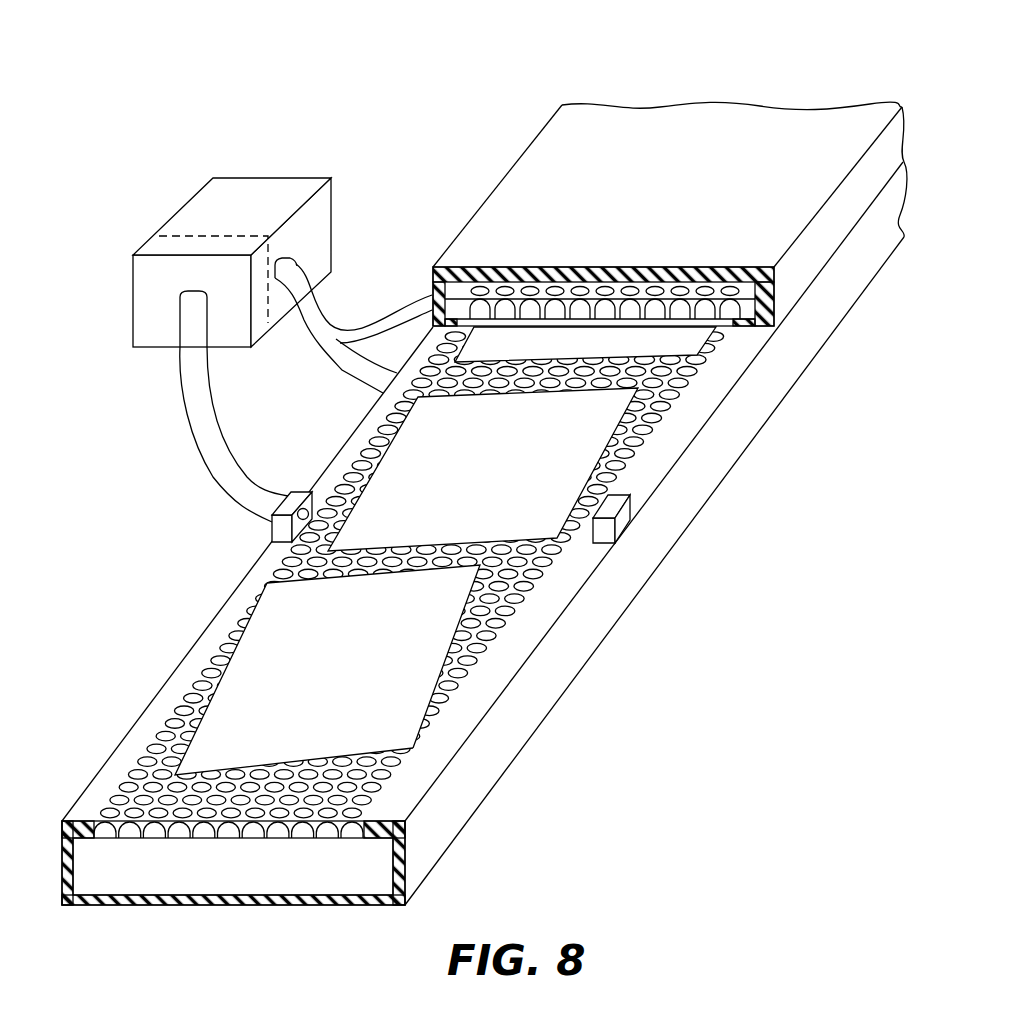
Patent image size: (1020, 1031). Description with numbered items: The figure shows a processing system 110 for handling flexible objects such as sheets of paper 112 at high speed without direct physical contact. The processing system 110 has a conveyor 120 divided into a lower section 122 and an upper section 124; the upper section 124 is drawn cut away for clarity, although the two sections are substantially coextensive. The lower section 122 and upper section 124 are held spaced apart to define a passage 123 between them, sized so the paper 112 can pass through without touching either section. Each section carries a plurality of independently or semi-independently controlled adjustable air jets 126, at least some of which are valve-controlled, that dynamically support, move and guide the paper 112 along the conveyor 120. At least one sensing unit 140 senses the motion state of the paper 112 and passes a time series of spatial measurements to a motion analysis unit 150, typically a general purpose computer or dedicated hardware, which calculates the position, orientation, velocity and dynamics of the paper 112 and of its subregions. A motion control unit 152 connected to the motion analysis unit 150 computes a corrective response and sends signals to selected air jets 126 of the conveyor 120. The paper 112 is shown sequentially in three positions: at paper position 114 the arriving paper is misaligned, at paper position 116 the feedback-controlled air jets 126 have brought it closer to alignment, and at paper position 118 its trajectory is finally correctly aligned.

The processing system 110 is at (199, 65).
The paper 112 is at (237, 693).
The paper position 114 is at (302, 622).
The paper position 116 is at (420, 448).
The paper position 118 is at (537, 333).
The conveyor 120 is at (688, 614).
The lower section 122 is at (543, 697).
The passage 123 is at (756, 332).
The upper section 124 is at (820, 237).
The air jets 126 is at (375, 800).
The sensing unit 140 is at (280, 533).
The motion analysis unit 150 is at (170, 247).
The motion control unit 152 is at (253, 207).